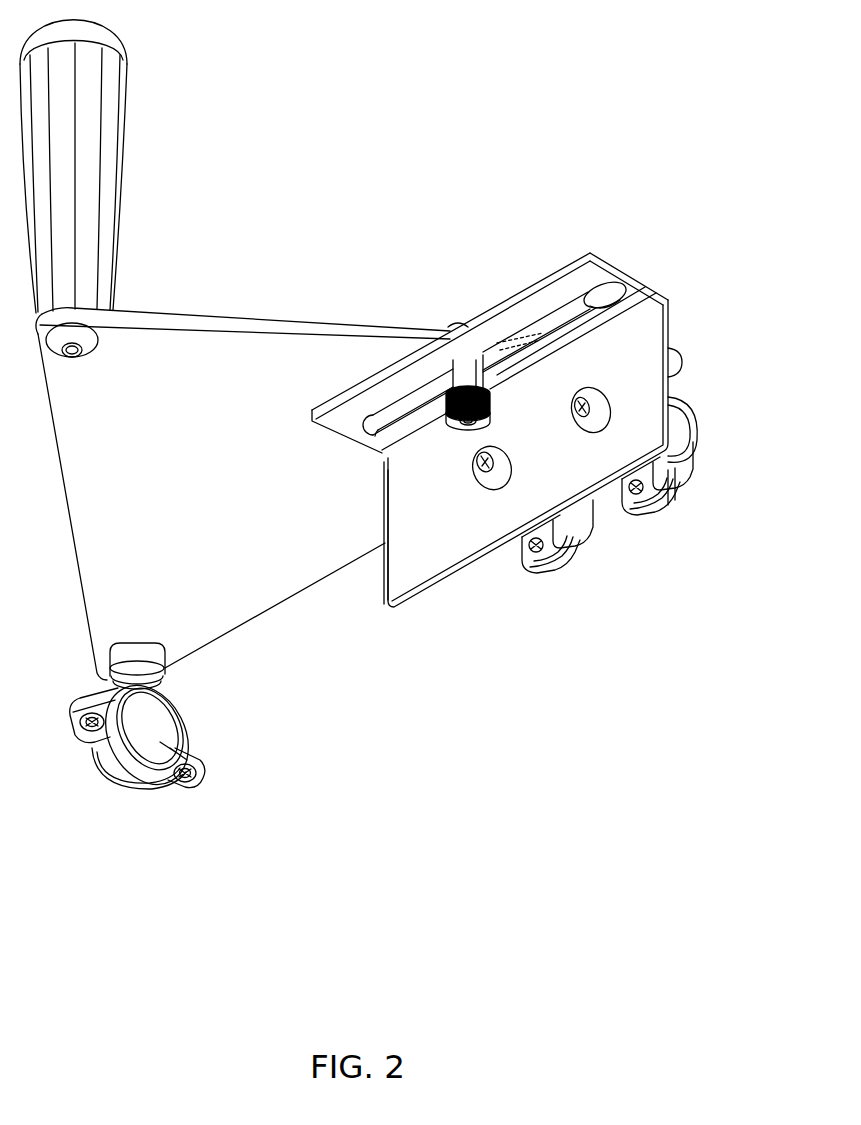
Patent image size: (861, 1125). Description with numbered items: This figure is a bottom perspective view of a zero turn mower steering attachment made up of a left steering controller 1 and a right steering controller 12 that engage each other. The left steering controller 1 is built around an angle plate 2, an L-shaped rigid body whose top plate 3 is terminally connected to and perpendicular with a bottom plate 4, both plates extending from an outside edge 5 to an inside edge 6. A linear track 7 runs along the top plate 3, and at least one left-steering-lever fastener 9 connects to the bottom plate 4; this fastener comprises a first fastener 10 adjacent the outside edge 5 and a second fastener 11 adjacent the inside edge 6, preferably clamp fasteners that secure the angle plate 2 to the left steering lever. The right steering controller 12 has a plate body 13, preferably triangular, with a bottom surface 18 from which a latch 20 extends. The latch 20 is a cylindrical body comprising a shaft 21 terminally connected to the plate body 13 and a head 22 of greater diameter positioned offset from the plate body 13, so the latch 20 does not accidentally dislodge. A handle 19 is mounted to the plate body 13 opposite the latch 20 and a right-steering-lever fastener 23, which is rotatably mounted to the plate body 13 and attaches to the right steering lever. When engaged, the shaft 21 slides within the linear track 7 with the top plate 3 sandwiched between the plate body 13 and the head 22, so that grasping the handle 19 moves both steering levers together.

The left steering controller 1 is at (411, 409).
The angle plate 2 is at (506, 446).
The top plate 3 is at (477, 369).
The bottom plate 4 is at (516, 434).
The outside edge 5 is at (668, 338).
The inside edge 6 is at (385, 498).
The linear track 7 is at (569, 308).
The left-steering-lever fastener 9 is at (606, 540).
The first fastener 10 is at (655, 515).
The second fastener 11 is at (550, 575).
The right steering controller 12 is at (281, 409).
The plate body 13 is at (72, 462).
The bottom surface 18 is at (206, 509).
The handle 19 is at (122, 112).
The latch 20 is at (517, 438).
The shaft 21 is at (493, 402).
The head 22 is at (467, 440).
The right-steering-lever fastener 23 is at (203, 748).